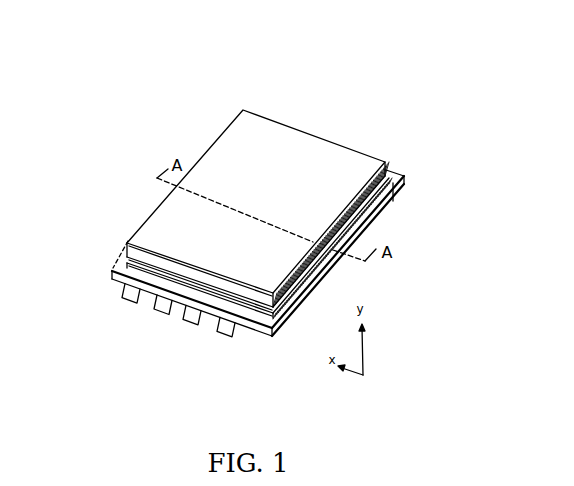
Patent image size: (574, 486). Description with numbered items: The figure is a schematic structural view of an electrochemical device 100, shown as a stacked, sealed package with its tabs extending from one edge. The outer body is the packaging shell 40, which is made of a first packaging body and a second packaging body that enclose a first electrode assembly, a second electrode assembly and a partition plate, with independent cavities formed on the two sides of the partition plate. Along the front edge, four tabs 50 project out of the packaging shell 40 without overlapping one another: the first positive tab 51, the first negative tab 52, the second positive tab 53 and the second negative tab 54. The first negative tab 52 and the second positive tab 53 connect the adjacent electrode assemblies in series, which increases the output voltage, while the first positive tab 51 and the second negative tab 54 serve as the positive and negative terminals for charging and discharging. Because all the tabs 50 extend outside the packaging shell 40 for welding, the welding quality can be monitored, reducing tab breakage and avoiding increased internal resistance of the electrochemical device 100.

The electrochemical device 100 is at (197, 93).
The packaging shell 40 is at (288, 143).
The tabs 50 is at (100, 318).
The first positive tab 51 is at (132, 295).
The first negative tab 52 is at (162, 307).
The second positive tab 53 is at (192, 317).
The second negative tab 54 is at (230, 328).